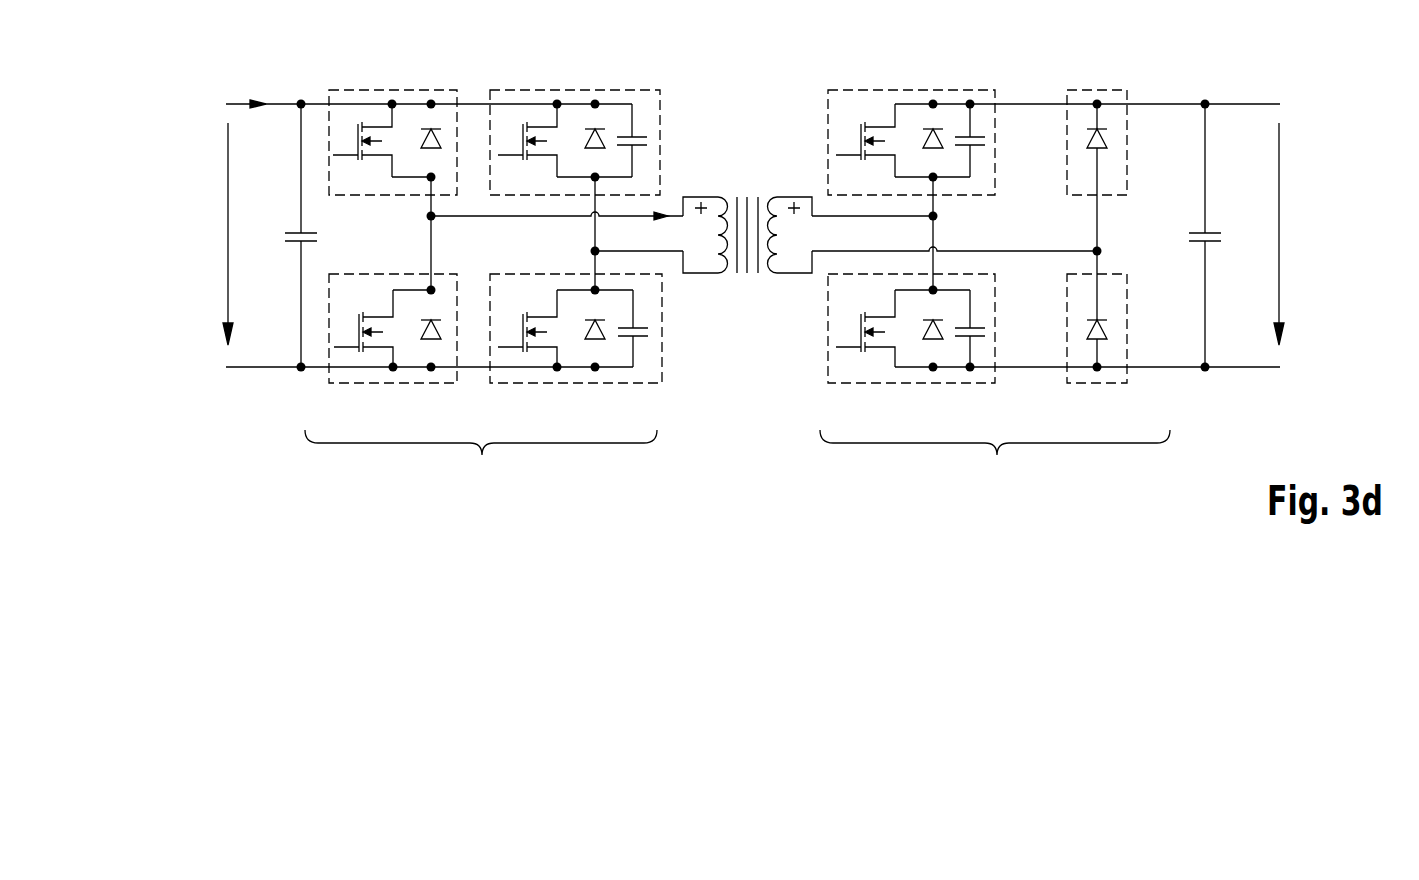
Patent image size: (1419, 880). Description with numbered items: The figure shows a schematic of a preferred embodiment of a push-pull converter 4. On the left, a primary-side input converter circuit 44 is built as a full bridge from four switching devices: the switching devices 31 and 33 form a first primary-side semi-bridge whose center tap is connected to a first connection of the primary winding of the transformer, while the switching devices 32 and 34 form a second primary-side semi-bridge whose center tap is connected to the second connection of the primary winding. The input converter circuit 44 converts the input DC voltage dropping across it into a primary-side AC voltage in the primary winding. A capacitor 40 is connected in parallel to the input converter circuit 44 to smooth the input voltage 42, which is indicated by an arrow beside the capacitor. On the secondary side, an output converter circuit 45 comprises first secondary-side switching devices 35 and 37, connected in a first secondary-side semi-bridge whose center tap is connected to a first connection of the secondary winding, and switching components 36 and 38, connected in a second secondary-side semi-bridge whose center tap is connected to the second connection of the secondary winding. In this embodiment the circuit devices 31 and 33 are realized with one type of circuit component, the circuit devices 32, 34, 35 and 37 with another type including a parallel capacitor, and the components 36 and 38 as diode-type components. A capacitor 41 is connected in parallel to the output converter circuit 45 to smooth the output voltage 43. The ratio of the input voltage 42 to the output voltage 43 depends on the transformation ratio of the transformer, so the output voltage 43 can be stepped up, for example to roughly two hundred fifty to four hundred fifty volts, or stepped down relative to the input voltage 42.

The push-pull converter 4 is at (190, 90).
The switching device 31 is at (378, 90).
The switching device 32 is at (538, 90).
The switching device 33 is at (378, 383).
The switching device 34 is at (538, 383).
The secondary-side switching device 35 is at (882, 90).
The switching component 36 is at (1088, 90).
The secondary-side switching device 37 is at (877, 383).
The switching component 38 is at (1087, 383).
The capacitor 40 is at (296, 232).
The capacitor 41 is at (1212, 232).
The input voltage 42 is at (228, 207).
The output voltage 43 is at (1280, 210).
The input converter circuit 44 is at (481, 460).
The output converter circuit 45 is at (995, 460).